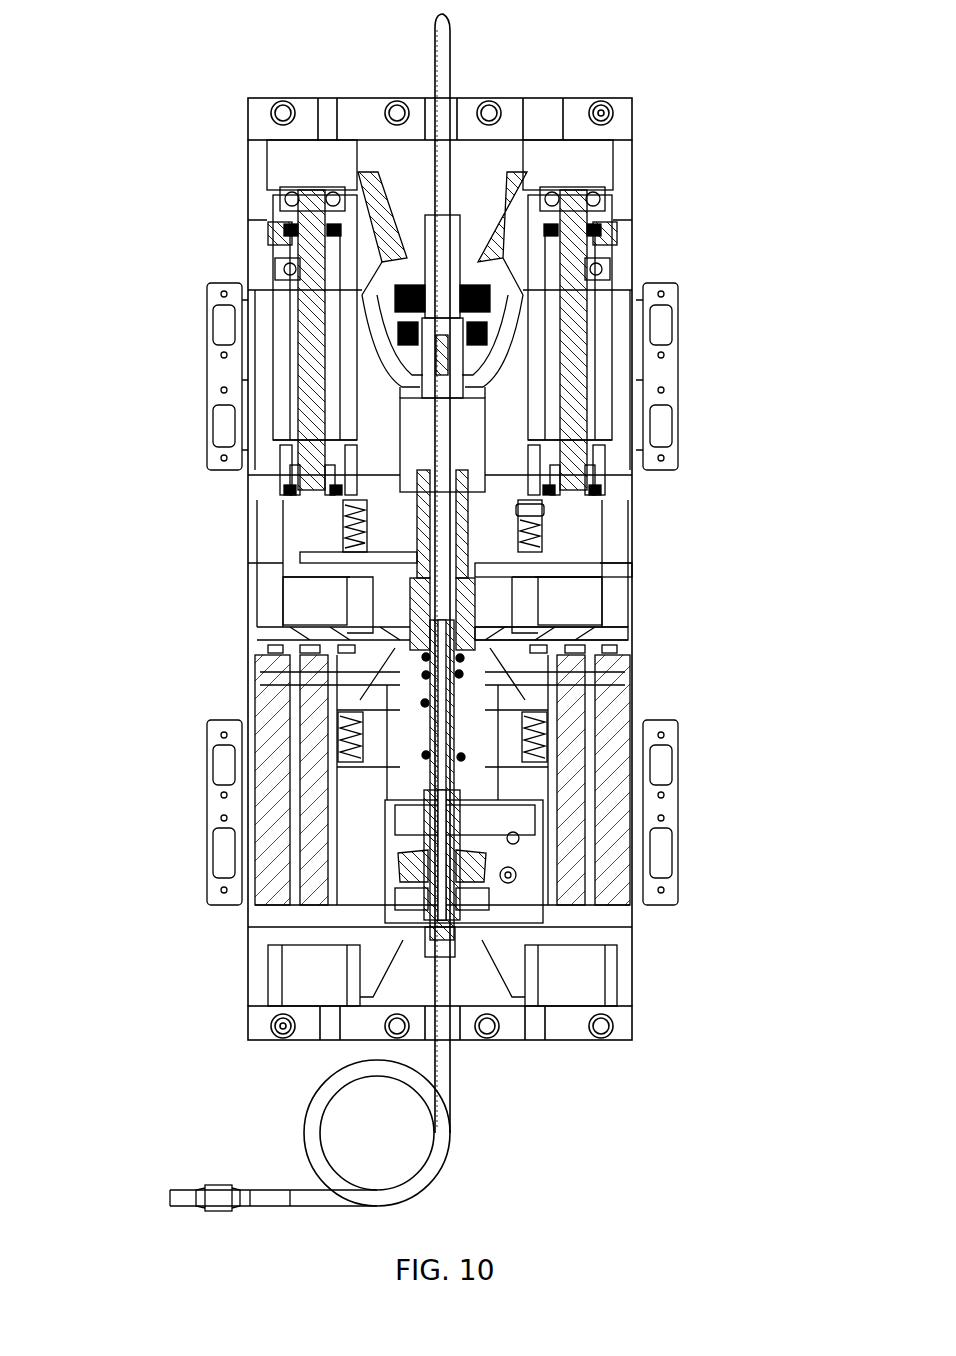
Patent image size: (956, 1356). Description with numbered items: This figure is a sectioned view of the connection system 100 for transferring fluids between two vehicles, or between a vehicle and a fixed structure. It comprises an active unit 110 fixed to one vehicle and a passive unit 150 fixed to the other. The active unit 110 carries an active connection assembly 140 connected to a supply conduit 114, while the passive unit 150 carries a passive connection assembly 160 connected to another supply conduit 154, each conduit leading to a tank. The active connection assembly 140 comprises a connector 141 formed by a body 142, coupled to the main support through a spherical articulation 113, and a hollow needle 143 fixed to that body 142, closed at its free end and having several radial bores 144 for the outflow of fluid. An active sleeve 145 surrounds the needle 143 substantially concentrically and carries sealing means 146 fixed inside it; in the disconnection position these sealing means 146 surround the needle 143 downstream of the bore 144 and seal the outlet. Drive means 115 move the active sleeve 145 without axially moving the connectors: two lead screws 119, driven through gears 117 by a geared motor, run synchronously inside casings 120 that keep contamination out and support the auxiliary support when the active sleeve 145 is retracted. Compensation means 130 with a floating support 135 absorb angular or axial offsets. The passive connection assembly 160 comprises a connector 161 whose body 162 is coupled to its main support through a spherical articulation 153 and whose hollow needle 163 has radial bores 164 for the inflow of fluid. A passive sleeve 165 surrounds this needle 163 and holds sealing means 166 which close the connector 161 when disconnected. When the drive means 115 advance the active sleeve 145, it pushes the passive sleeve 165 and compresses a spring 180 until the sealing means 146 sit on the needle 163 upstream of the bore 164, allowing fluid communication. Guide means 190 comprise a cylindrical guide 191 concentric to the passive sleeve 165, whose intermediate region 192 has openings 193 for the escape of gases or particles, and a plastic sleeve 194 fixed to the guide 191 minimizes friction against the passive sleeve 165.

The connection system 100 is at (678, 174).
The active unit 110 is at (694, 405).
The spherical articulation 113 is at (400, 297).
The supply conduit 114 is at (435, 70).
The drive means 115 is at (292, 232).
The gears 117 is at (290, 268).
The lead screw 119 is at (308, 380).
The casing 120 is at (273, 408).
The compensation means 130 is at (350, 525).
The floating support 135 is at (388, 557).
The active connection assembly 140 is at (478, 309).
The connector 141 is at (480, 338).
The body 142 is at (450, 348).
The needle 143 is at (450, 470).
The bore 144 is at (457, 538).
The active sleeve 145 is at (460, 674).
The sealing means 146 is at (426, 675).
The passive unit 150 is at (245, 972).
The spherical articulation 153 is at (510, 877).
The supply conduit 154 is at (445, 1102).
The passive connection assembly 160 is at (423, 787).
The connector 161 is at (432, 828).
The body 162 is at (462, 757).
The needle 163 is at (430, 753).
The bore 164 is at (426, 657).
The passive sleeve 165 is at (458, 723).
The sealing means 166 is at (426, 703).
The spring 180 is at (516, 840).
The guide means 190 is at (410, 598).
The guide 191 is at (470, 590).
The intermediate region 192 is at (475, 642).
The openings 193 is at (473, 613).
The sleeve 194 is at (462, 658).